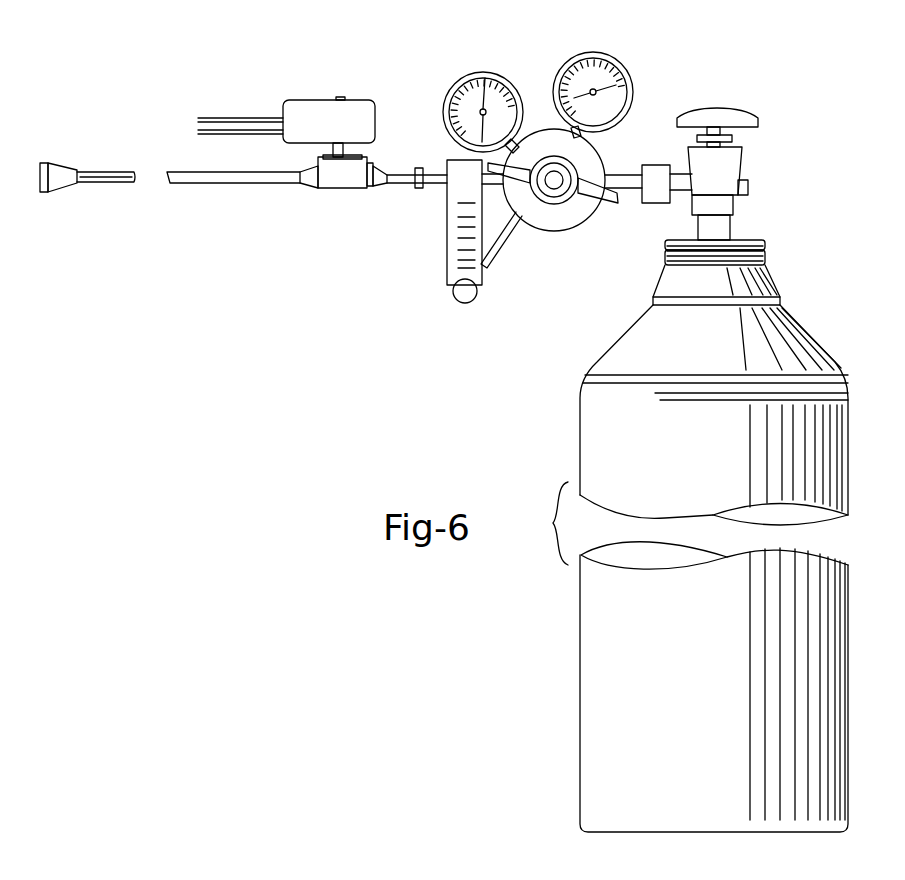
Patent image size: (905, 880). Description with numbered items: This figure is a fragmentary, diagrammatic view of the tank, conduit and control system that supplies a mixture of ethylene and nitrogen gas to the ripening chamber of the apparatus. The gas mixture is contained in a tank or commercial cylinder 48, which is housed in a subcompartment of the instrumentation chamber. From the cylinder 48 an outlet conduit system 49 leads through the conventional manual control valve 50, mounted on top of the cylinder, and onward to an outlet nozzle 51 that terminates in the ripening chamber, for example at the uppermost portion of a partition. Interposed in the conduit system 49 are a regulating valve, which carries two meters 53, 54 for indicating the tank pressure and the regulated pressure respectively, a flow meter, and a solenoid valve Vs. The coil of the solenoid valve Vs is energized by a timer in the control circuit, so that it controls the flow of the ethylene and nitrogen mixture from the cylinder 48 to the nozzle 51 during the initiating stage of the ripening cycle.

The cylinder 48 is at (582, 438).
The outlet conduit system 49 is at (620, 174).
The manual control valve 50 is at (735, 109).
The outlet nozzle 51 is at (52, 165).
The meter 53 is at (498, 71).
The meter 54 is at (595, 52).
The solenoid valve Vs is at (297, 100).